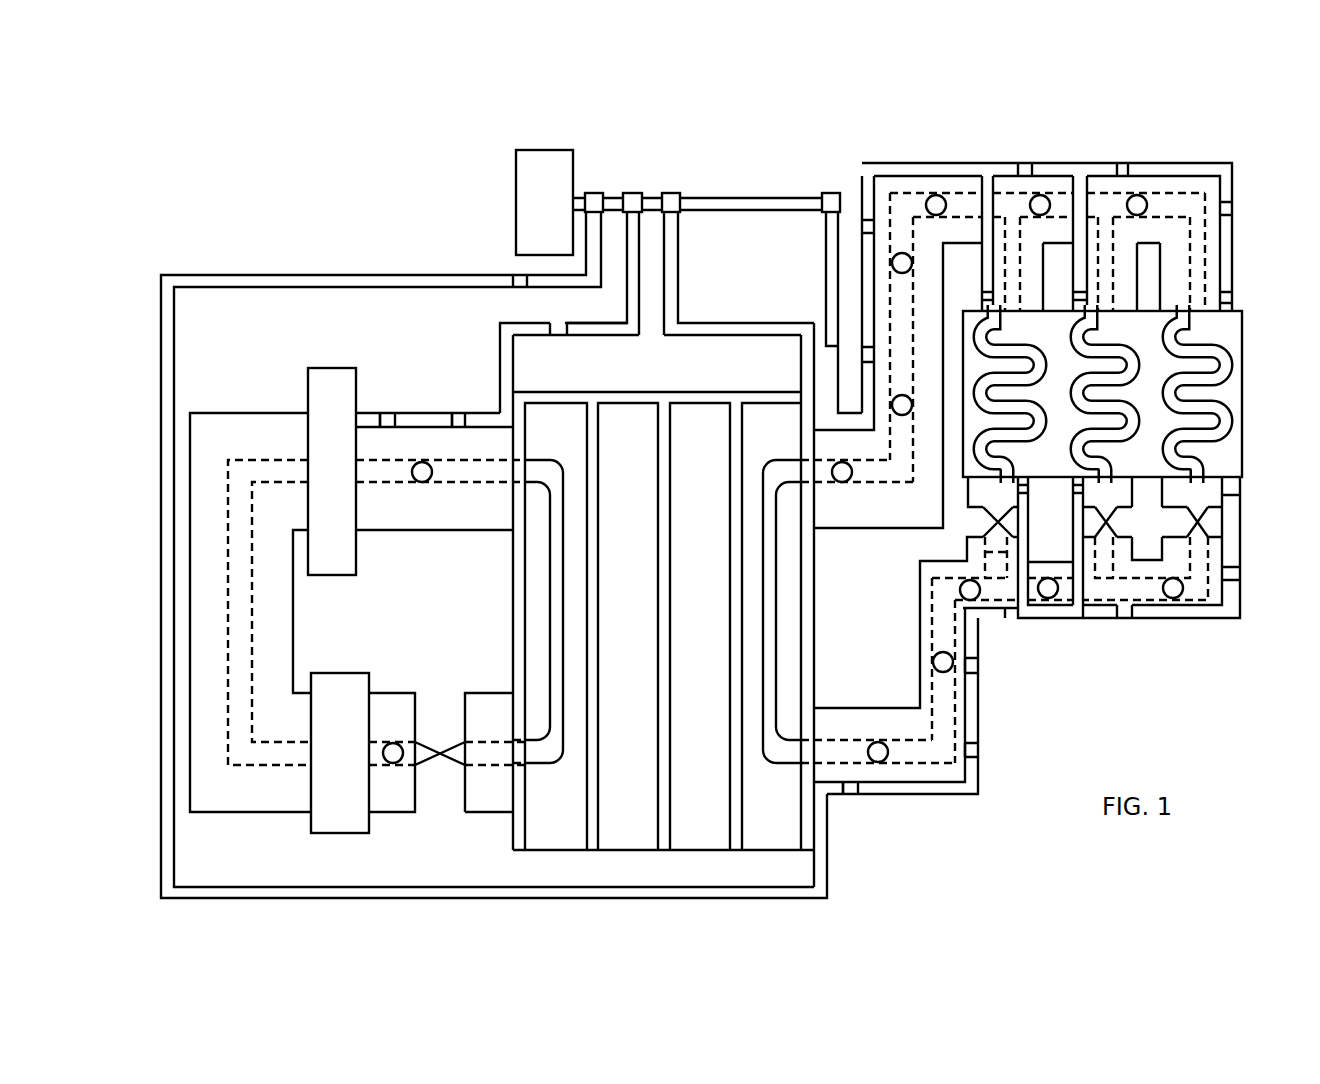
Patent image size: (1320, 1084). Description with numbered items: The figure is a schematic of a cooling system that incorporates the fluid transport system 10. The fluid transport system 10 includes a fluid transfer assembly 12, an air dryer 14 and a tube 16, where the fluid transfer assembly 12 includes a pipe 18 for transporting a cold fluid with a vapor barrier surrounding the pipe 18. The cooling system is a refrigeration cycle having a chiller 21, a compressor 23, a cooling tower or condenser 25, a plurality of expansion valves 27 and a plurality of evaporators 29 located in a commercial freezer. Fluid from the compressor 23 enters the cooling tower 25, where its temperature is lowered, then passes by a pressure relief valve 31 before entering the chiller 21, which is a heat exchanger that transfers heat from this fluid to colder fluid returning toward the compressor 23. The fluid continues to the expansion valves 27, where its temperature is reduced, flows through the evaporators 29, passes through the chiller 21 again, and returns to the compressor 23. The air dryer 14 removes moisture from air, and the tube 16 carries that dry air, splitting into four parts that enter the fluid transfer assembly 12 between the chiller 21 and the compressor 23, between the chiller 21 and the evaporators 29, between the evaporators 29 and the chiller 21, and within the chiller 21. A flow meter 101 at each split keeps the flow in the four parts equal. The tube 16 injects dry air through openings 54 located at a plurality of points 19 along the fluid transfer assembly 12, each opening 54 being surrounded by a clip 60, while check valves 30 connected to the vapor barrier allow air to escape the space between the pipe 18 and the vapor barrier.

The fluid transport system 10 is at (245, 180).
The fluid transfer assembly 12 is at (988, 161).
The air dryer 14 is at (512, 198).
The tube 16 is at (298, 274).
The pipe 18 is at (875, 483).
The points 19 is at (520, 288).
The chiller 21 is at (784, 853).
The compressor 23 is at (323, 366).
The cooling tower 25 is at (349, 670).
The expansion valves 27 is at (1012, 527).
The evaporators 29 is at (1028, 358).
The check valves 30 is at (422, 483).
The pressure relief valve 31 is at (441, 770).
The openings 54 is at (386, 412).
The clip 60 is at (380, 412).
The flow meter 101 is at (598, 192).